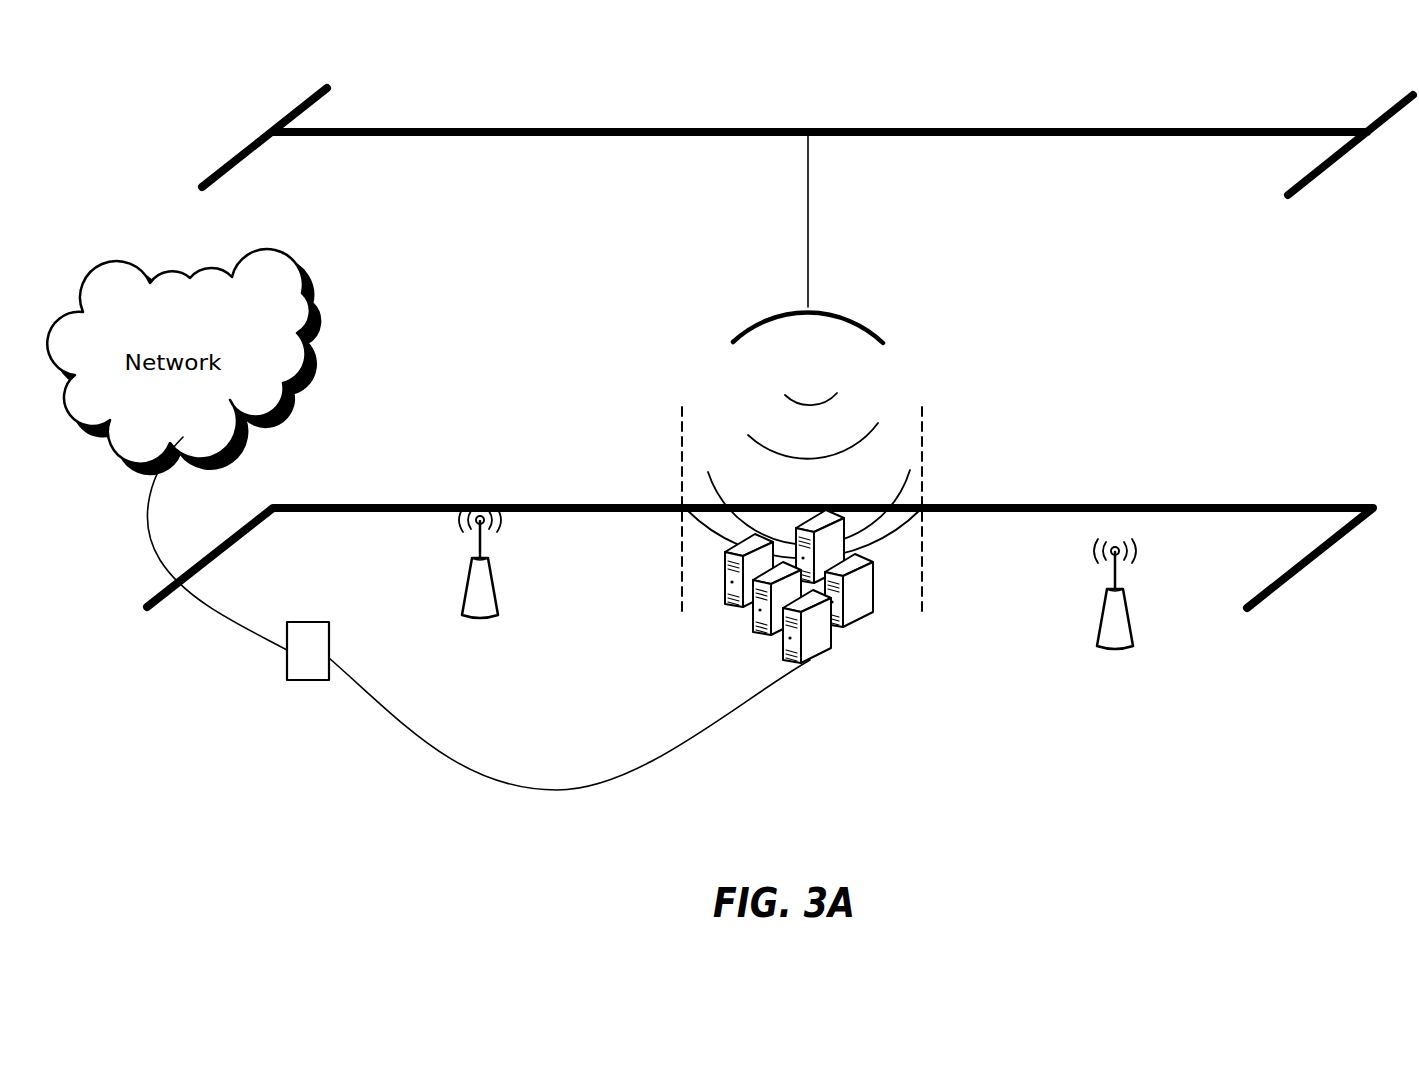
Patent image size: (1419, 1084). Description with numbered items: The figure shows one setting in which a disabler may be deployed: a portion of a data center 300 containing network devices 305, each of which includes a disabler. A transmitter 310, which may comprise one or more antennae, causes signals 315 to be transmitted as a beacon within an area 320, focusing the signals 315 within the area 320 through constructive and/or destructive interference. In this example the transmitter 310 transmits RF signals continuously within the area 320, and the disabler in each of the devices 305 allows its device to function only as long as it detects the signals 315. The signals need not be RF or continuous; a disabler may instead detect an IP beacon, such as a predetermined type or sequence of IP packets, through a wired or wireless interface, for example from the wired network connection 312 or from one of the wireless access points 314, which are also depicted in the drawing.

The data center 300 is at (300, 768).
The network devices 305 is at (852, 638).
The transmitter 310 is at (840, 312).
The wired network connection 312 is at (371, 692).
The wireless access points 314 is at (513, 577).
The signals 315 is at (850, 405).
The area 320 is at (703, 537).